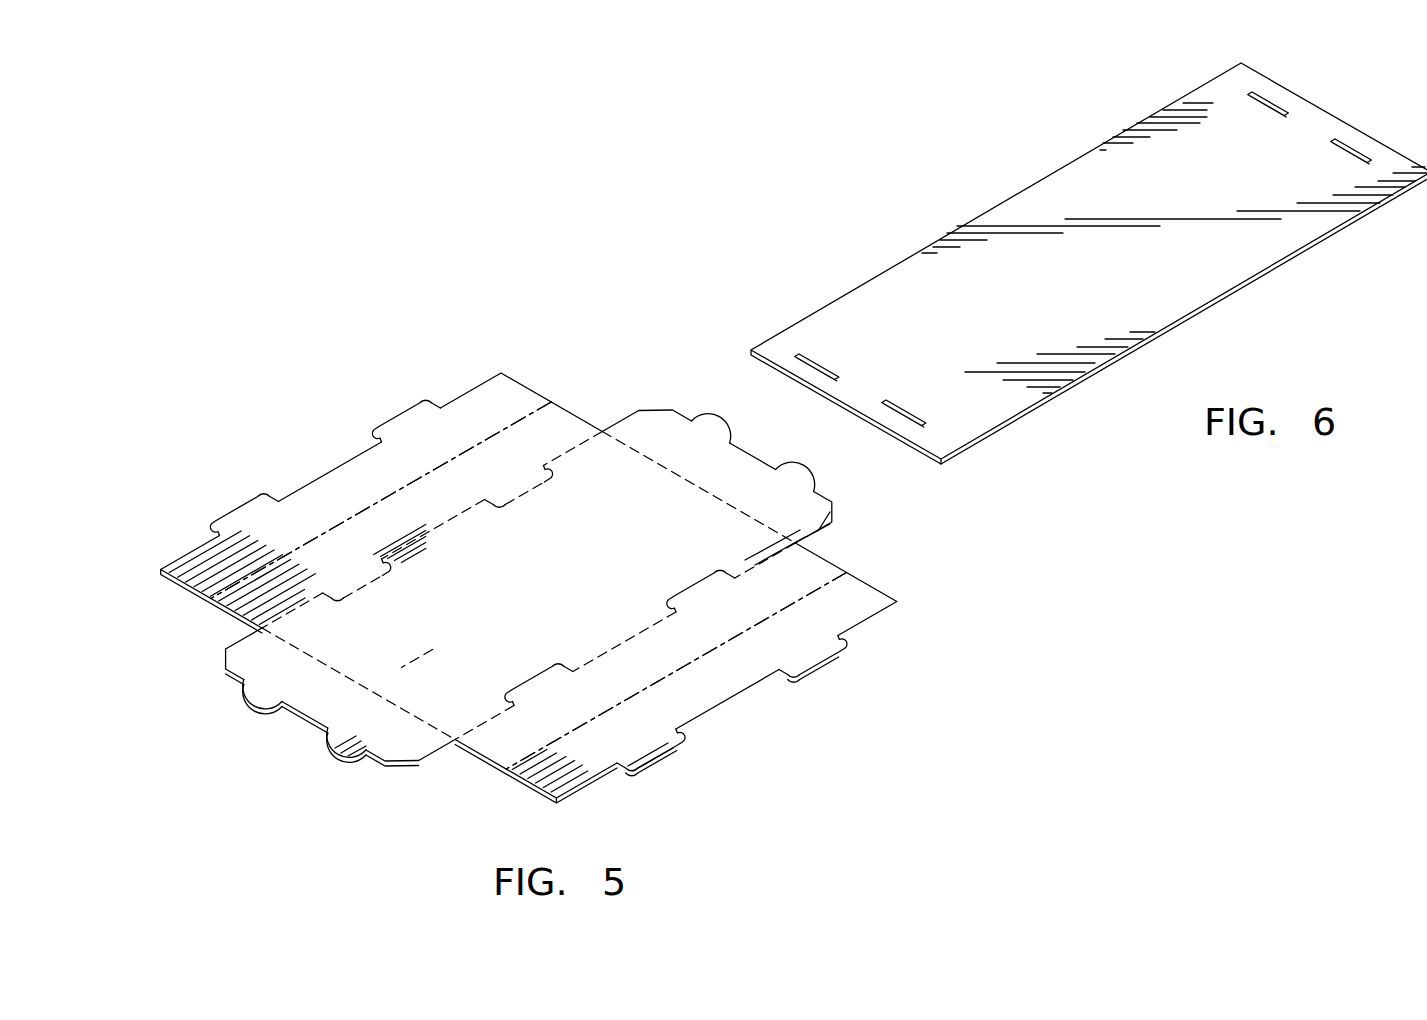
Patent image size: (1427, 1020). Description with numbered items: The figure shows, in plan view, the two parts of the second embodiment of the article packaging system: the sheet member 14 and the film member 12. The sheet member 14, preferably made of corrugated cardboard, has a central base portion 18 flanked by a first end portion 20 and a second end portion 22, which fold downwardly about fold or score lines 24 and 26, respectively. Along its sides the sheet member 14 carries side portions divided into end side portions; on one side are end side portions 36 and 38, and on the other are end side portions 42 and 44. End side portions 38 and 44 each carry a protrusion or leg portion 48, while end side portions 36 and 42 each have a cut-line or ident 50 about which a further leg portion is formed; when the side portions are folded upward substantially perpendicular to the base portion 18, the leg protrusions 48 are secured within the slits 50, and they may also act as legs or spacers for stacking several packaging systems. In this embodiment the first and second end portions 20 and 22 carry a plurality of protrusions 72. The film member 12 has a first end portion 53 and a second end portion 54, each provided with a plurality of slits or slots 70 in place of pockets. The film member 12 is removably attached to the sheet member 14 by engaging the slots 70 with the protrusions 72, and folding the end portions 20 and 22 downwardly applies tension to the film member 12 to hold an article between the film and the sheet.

In FIG. 6, the film member 12 is at (1033, 209).
In FIG. 5, the sheet member 14 is at (255, 384).
In FIG. 5, the base portion 18 is at (512, 592).
In FIG. 5, the first end portion 20 is at (837, 537).
In FIG. 5, the second end portion 22 is at (407, 748).
In FIG. 5, the fold line 24 is at (317, 660).
In FIG. 5, the fold line 26 is at (665, 468).
In FIG. 5, the end side portion 36 is at (708, 627).
In FIG. 5, the end side portion 38 is at (698, 697).
In FIG. 5, the end side portion 42 is at (385, 523).
In FIG. 5, the end side portion 44 is at (318, 507).
In FIG. 5, the leg protrusion 48 is at (400, 417).
In FIG. 5, the cut-line 50 is at (355, 580).
In FIG. 6, the first end portion 53 is at (1306, 248).
In FIG. 6, the second end portion 54 is at (1021, 417).
In FIG. 6, the slot 70 is at (1335, 156).
In FIG. 5, the protrusion 72 is at (723, 422).